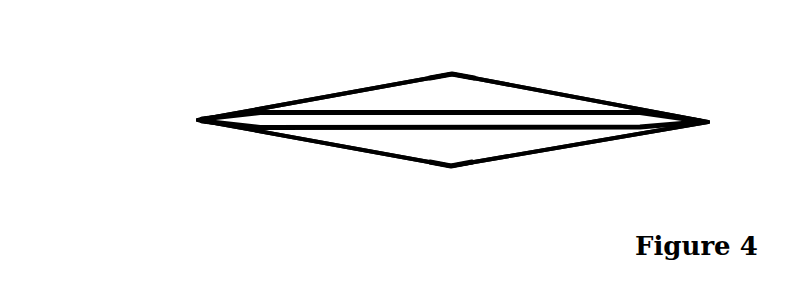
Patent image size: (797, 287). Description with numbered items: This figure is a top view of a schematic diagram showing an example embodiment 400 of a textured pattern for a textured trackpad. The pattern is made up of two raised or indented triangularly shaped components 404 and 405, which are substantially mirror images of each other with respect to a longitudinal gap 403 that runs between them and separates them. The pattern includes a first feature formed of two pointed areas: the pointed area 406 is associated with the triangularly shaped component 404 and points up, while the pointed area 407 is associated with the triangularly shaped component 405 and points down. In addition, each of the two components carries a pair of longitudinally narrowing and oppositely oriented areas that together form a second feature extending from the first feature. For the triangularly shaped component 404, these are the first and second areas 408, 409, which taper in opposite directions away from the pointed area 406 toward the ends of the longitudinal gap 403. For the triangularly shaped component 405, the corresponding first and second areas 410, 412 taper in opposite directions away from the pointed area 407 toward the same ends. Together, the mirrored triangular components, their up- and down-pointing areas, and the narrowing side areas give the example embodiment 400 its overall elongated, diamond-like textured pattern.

The example embodiment 400 is at (132, 86).
The longitudinal gap 403 is at (665, 116).
The triangularly shaped component 404 is at (414, 100).
The triangularly shaped component 405 is at (498, 142).
The pointed area 406 is at (453, 76).
The pointed area 407 is at (452, 163).
The first area 408 is at (590, 99).
The second area 409 is at (341, 104).
The first area 410 is at (587, 141).
The second area 412 is at (338, 143).